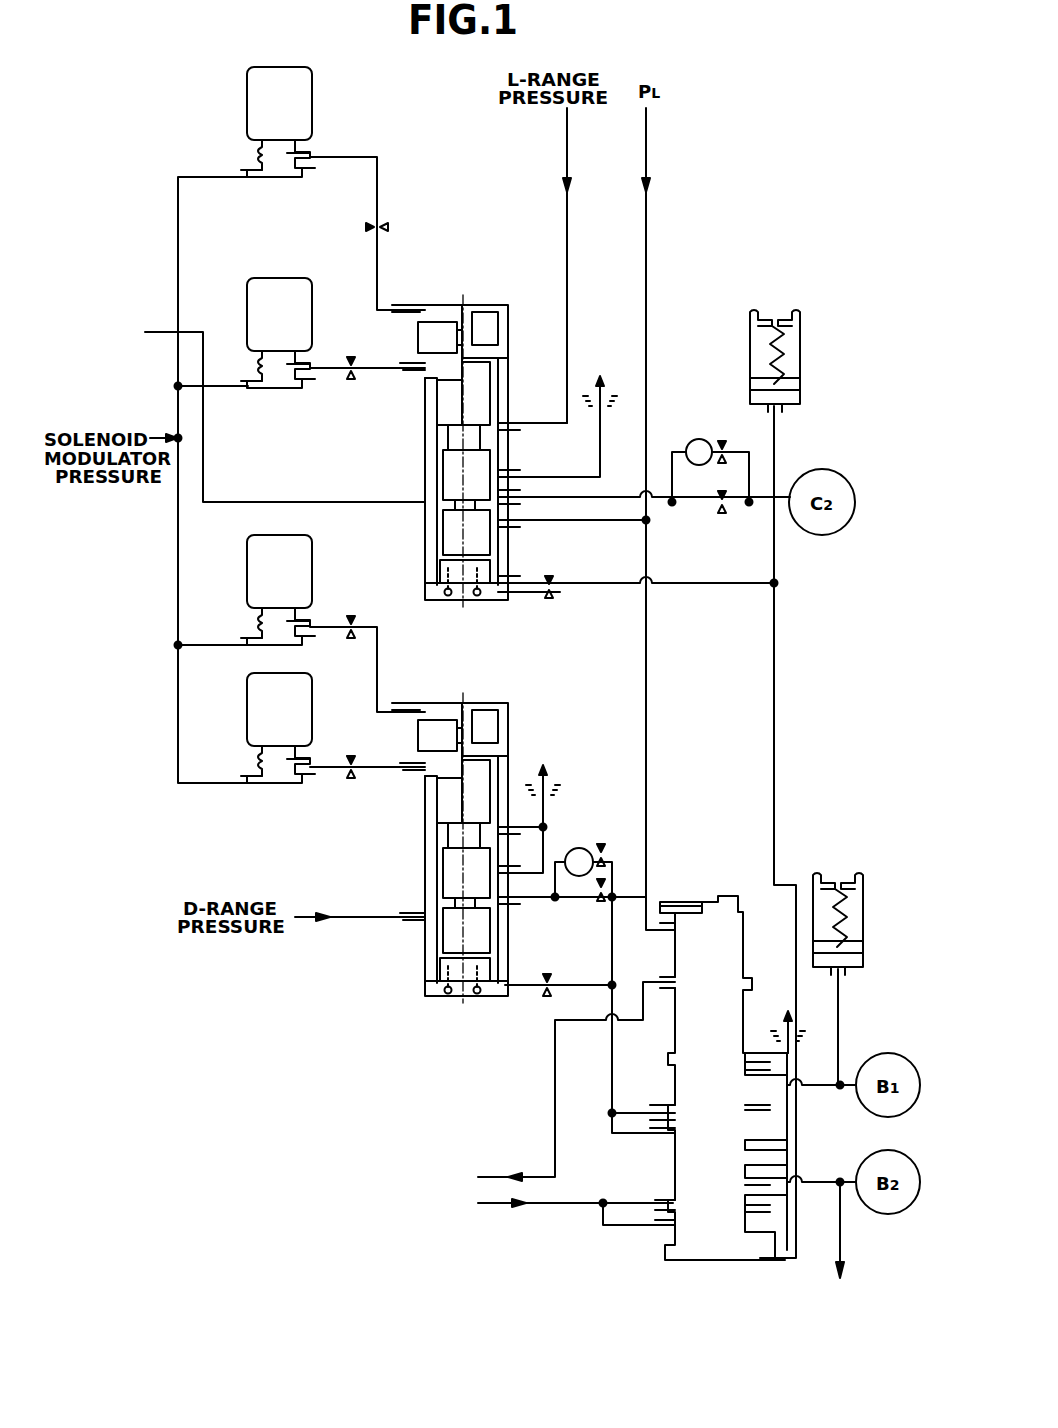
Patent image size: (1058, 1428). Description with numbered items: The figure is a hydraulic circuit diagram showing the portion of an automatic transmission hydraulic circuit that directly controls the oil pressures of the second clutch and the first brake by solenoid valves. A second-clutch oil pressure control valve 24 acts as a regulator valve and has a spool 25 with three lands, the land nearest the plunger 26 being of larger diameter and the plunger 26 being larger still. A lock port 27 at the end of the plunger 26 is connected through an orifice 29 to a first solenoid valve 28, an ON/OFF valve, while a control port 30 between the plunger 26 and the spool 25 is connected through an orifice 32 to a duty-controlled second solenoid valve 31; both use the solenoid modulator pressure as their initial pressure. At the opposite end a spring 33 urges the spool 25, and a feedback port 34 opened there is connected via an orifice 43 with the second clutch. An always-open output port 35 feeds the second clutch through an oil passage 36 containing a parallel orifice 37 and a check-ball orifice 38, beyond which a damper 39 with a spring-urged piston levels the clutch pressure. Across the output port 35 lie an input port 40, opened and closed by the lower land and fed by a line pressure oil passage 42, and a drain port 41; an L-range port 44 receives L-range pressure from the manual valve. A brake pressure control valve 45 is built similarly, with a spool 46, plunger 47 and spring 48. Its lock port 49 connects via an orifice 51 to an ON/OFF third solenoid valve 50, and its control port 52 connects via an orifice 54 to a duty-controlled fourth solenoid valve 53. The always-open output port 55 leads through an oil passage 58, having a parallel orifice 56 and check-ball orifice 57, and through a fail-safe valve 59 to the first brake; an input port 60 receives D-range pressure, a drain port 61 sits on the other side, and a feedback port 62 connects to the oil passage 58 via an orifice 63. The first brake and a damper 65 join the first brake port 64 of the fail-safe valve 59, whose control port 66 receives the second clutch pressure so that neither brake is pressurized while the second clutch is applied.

The C2 oil pressure control valve 24 is at (583, 439).
The spool 25 is at (440, 457).
The plunger 26 is at (500, 338).
The lock port 27 is at (418, 305).
The first solenoid valve 28 is at (312, 100).
The orifice 29 is at (380, 218).
The control port 30 is at (420, 363).
The second solenoid valve 31 is at (278, 266).
The orifice 32 is at (362, 355).
The spring 33 is at (440, 600).
The feedback port 34 is at (505, 583).
The output port 35 is at (510, 497).
The oil passage 36 is at (672, 505).
The orifice 37 is at (722, 525).
The orifice having a check ball 38 is at (718, 435).
The damper 39 is at (800, 354).
The input port 40 is at (505, 520).
The drain port 41 is at (505, 477).
The line pressure oil passage 42 is at (648, 322).
The orifice 43 is at (552, 592).
The L-range port 44 is at (505, 423).
The brake pressure control valve 45 is at (494, 840).
The spool 46 is at (446, 870).
The plunger 47 is at (490, 737).
The spring 48 is at (470, 997).
The lock port 49 is at (418, 703).
The third solenoid valve 50 is at (307, 540).
The orifice 51 is at (351, 615).
The control port 52 is at (420, 772).
The fourth solenoid valve 53 is at (247, 715).
The orifice 54 is at (351, 754).
The output port 55 is at (520, 900).
The orifice 56 is at (614, 895).
The orifice having a check ball 57 is at (580, 848).
The oil passage 58 is at (614, 958).
The fail-safe valve 59 is at (720, 892).
The input port 60 is at (412, 922).
The drain port 61 is at (500, 873).
The feedback port 62 is at (512, 992).
The orifice 63 is at (549, 973).
The first brake port 64 is at (770, 1092).
The damper 65 is at (865, 918).
The control port 66 is at (762, 1258).